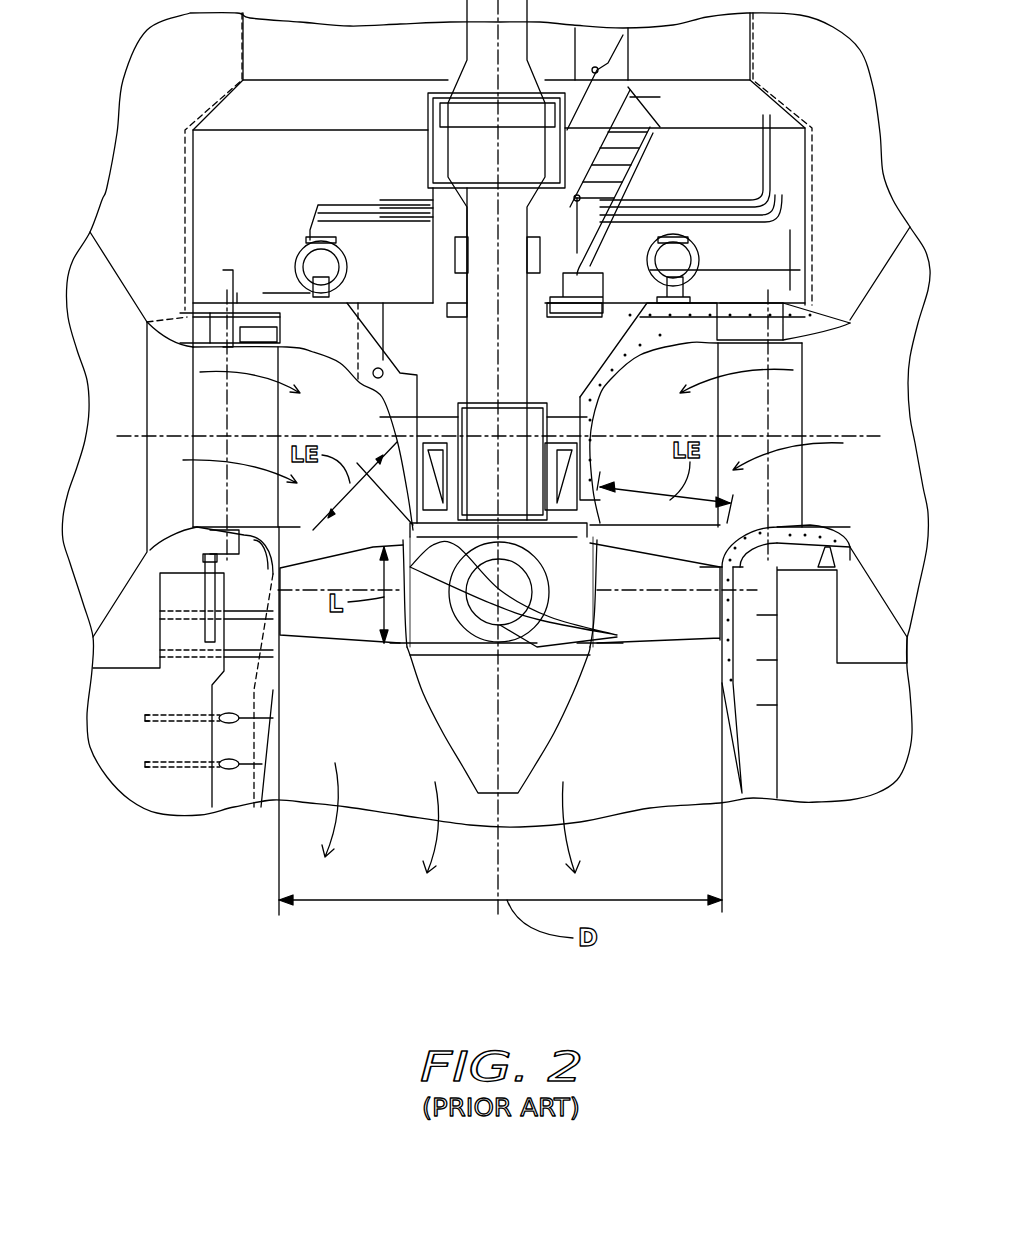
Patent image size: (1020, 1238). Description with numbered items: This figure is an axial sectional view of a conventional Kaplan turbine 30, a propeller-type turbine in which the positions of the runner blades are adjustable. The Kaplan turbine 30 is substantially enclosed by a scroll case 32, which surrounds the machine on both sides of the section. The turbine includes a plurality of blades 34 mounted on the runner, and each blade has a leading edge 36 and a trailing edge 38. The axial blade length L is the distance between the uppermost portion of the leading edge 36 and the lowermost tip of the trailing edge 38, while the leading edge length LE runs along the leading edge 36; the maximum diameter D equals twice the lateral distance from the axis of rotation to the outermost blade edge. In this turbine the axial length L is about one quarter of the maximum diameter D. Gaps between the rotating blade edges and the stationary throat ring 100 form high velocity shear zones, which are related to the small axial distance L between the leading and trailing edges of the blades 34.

The Kaplan turbine 30 is at (577, 752).
The scroll case 32 is at (128, 288).
The blades 34 is at (350, 633).
The leading edge 36 is at (310, 553).
The trailing edge 38 is at (310, 647).
The throat ring 100 is at (733, 602).